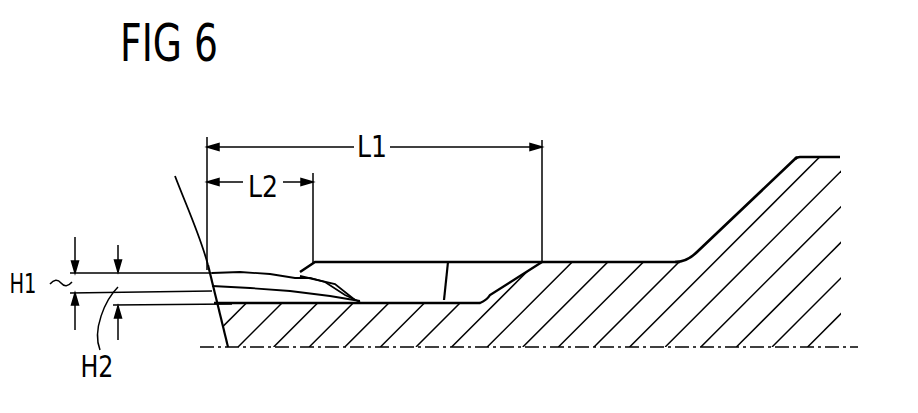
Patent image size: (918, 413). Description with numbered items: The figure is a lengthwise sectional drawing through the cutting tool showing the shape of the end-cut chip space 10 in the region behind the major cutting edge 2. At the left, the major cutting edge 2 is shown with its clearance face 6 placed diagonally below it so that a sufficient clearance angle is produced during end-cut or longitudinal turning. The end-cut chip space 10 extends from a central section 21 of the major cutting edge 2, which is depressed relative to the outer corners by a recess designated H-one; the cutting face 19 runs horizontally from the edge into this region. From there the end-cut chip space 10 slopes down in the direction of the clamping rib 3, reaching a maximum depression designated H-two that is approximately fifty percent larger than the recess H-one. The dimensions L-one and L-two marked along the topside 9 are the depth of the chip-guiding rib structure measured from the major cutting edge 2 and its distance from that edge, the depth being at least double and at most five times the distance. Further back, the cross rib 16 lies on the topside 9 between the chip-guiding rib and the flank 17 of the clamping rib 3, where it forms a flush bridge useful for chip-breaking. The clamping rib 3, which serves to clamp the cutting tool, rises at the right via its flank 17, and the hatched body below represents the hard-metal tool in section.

The major cutting edge 2 is at (186, 201).
The clamping rib 3 is at (830, 157).
The clearance face 6 is at (213, 336).
The topside 9 is at (634, 186).
The end-cut chip space 10 is at (403, 300).
The cross rib 16 is at (625, 262).
The flank 17 is at (752, 202).
The cutting face 19 is at (296, 251).
The central section 21 is at (193, 287).